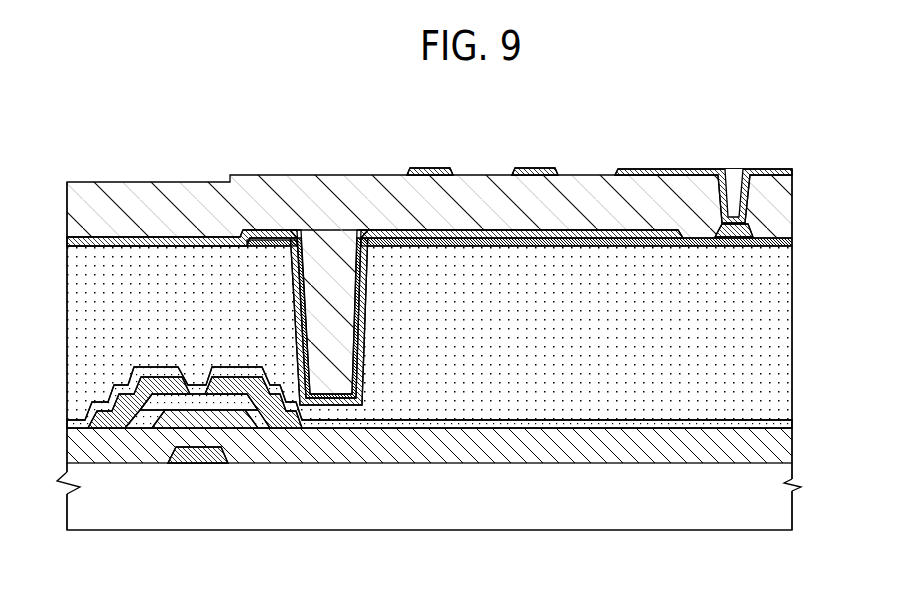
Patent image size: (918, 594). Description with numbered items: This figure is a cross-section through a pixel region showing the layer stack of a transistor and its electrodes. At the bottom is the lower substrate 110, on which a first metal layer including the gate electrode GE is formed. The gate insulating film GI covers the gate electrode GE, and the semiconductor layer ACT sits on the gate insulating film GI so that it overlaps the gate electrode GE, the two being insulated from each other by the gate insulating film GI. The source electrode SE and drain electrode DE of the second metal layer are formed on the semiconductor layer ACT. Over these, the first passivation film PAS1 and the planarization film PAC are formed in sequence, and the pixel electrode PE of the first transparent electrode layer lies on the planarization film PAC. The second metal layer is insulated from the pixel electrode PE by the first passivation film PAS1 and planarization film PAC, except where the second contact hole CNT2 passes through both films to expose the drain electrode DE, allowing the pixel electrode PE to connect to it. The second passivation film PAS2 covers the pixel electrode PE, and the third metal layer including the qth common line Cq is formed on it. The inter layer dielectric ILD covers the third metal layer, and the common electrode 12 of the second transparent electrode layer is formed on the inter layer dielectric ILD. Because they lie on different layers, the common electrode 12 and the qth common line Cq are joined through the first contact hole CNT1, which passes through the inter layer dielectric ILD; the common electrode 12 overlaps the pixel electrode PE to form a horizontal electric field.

The lower substrate 110 is at (783, 497).
The gate insulating film GI is at (783, 450).
The gate electrode GE is at (208, 460).
The semiconductor layer ACT is at (150, 428).
The source electrode SE is at (125, 425).
The drain electrode DE is at (255, 430).
The first passivation film PAS1 is at (783, 421).
The planarization film PAC is at (783, 357).
The second passivation film PAS2 is at (793, 243).
The pixel electrode PE is at (583, 237).
The second contact hole CNT2 is at (328, 282).
The inter layer dielectric ILD is at (793, 193).
The qth common line Cq is at (755, 234).
The first contact hole CNT1 is at (733, 186).
The common electrode 12 is at (779, 170).